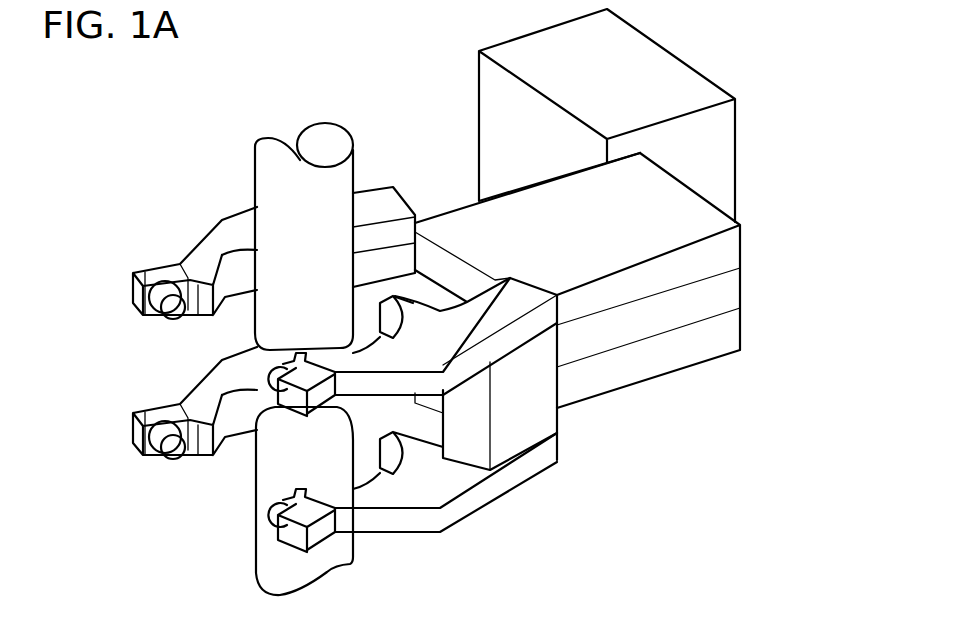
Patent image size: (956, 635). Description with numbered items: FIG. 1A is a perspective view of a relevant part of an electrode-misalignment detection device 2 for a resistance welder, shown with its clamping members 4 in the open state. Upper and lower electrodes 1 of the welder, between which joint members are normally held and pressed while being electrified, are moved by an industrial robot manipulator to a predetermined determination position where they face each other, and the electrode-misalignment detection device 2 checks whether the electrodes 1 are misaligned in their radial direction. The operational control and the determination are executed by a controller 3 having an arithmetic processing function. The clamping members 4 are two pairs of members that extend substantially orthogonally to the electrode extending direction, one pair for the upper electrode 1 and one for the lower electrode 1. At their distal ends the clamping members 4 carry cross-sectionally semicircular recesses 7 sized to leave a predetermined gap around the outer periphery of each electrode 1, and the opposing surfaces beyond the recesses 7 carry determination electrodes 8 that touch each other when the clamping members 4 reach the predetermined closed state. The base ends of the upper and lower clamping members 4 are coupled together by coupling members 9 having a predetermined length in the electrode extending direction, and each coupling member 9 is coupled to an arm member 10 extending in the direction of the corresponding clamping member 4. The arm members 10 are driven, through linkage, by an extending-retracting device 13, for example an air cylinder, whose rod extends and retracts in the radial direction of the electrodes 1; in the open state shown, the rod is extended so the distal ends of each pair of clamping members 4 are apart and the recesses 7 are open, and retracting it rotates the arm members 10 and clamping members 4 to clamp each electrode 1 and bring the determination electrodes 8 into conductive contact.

The electrode 1 is at (255, 163).
The electrode-misalignment detection device 2 is at (425, 168).
The controller 3 is at (678, 57).
The clamping member 4 is at (197, 247).
The recess 7 is at (235, 263).
The determination electrode 8 is at (265, 362).
The coupling member 9 is at (420, 255).
The arm member 10 is at (383, 290).
The extending-retracting device 13 is at (742, 251).